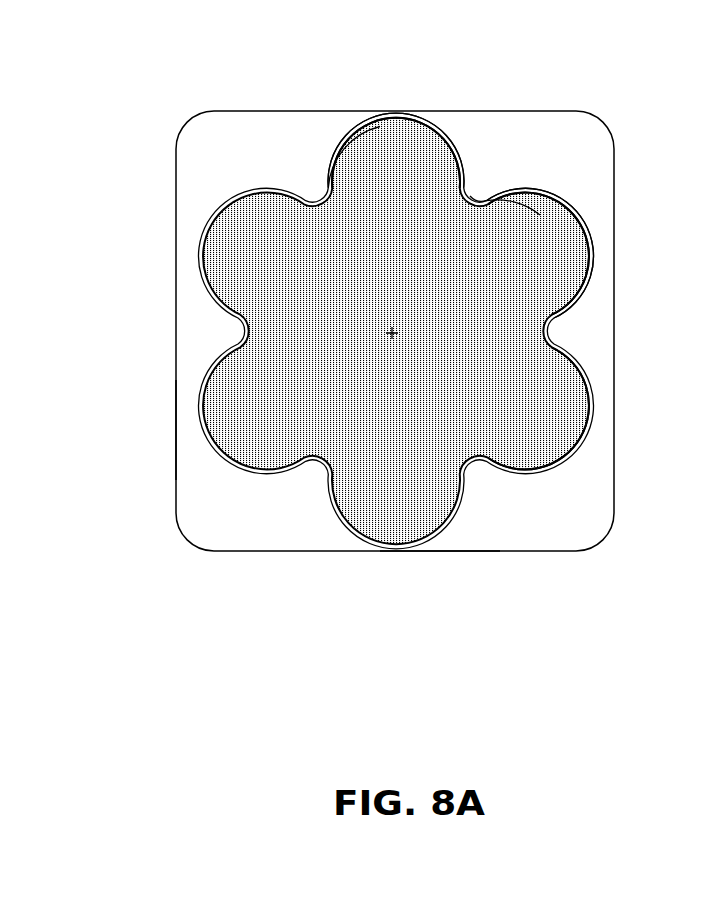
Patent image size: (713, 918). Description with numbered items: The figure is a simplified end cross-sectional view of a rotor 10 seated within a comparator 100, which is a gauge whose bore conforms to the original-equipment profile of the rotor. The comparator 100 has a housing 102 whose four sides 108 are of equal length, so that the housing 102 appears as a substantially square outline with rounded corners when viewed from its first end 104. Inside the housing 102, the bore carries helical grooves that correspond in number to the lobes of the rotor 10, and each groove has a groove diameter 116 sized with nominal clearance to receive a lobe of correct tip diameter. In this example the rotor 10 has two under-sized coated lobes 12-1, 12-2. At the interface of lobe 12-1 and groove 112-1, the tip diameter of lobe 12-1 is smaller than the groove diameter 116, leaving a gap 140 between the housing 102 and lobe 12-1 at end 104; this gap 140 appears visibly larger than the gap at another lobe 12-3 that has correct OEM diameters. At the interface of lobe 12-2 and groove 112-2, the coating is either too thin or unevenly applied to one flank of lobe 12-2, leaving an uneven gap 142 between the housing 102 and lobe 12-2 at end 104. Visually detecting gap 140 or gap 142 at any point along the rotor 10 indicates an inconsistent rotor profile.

The comparator 100 is at (240, 103).
The housing 102 is at (287, 552).
The first end 104 is at (195, 453).
The sides 108 is at (438, 552).
The rotor 10 is at (338, 304).
The lobe 12-1 is at (580, 270).
The lobe 12-2 is at (382, 130).
The lobe 12-3 is at (580, 423).
The groove 112-1 is at (578, 253).
The groove 112-2 is at (336, 162).
The groove diameter 116 is at (524, 184).
The gap 140 is at (560, 197).
The uneven gap 142 is at (360, 131).